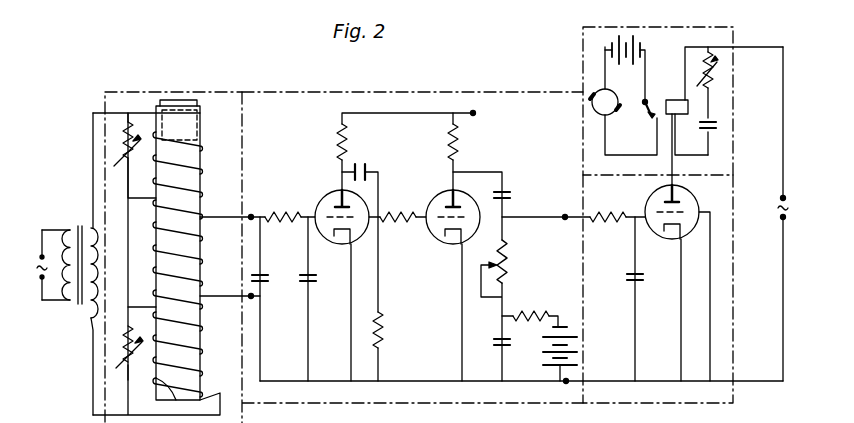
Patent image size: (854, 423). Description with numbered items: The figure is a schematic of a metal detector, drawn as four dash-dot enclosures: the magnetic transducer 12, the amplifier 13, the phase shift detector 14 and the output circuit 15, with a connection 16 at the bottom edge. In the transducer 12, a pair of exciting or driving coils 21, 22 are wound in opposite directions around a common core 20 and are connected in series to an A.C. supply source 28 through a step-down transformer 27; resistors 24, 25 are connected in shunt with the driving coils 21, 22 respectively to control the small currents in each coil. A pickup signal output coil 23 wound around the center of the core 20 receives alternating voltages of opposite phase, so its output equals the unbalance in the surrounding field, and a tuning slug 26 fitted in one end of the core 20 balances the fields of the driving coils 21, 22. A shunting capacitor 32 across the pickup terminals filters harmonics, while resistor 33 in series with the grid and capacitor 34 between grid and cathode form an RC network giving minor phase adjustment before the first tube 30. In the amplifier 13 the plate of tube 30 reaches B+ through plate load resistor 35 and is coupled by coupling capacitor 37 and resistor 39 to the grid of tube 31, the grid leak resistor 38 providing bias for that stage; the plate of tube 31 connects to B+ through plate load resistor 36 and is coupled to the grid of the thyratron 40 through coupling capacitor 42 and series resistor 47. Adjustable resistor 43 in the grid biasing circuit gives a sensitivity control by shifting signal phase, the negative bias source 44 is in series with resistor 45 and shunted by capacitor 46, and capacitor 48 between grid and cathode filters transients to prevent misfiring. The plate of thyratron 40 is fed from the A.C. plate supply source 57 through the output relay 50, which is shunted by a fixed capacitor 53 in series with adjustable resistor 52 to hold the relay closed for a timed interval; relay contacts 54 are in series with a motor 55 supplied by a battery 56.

The magnetic transducer 12 is at (166, 92).
The amplifier 13 is at (506, 92).
The phase shift detector 14 is at (736, 242).
The output circuit 15 is at (733, 29).
The connection 16 is at (561, 417).
The core 20 is at (210, 208).
The driving coil 21 is at (201, 162).
The driving coil 22 is at (158, 385).
The pickup signal output coil 23 is at (200, 264).
The resistor 24 is at (128, 155).
The resistor 25 is at (130, 343).
The tuning slug 26 is at (193, 100).
The step-down transformer 27 is at (82, 308).
The A.C. supply source 28 is at (36, 280).
The amplifier tube 30 is at (332, 196).
The amplifier tube 31 is at (444, 198).
The shunting capacitor 32 is at (266, 279).
The resistor 33 is at (287, 214).
The capacitor 34 is at (305, 288).
The plate load resistor 35 is at (346, 150).
The plate load resistor 36 is at (458, 152).
The coupling capacitor 37 is at (367, 172).
The grid leak resistor 38 is at (388, 336).
The resistor 39 is at (414, 224).
The thyratron 40 is at (648, 200).
The coupling capacitor 42 is at (508, 195).
The adjustable resistor 43 is at (510, 274).
The negative bias source 44 is at (548, 365).
The resistor 45 is at (548, 314).
The capacitor 46 is at (497, 348).
The series resistor 47 is at (620, 218).
The capacitor 48 is at (630, 288).
The output relay 50 is at (670, 100).
The adjustable resistor 52 is at (716, 78).
The fixed capacitor 53 is at (704, 130).
The relay contacts 54 is at (644, 116).
The motor 55 is at (610, 100).
The battery 56 is at (632, 45).
The A.C. plate supply source 57 is at (782, 198).